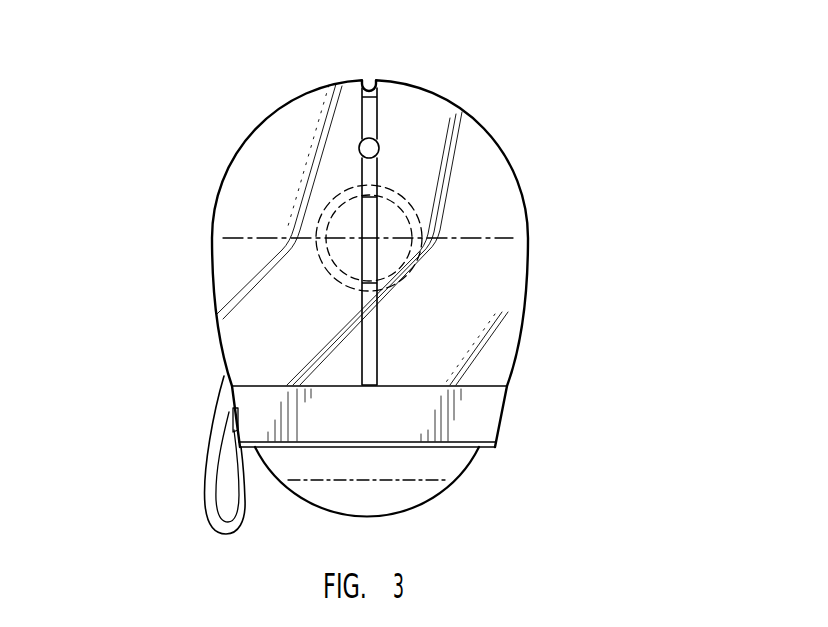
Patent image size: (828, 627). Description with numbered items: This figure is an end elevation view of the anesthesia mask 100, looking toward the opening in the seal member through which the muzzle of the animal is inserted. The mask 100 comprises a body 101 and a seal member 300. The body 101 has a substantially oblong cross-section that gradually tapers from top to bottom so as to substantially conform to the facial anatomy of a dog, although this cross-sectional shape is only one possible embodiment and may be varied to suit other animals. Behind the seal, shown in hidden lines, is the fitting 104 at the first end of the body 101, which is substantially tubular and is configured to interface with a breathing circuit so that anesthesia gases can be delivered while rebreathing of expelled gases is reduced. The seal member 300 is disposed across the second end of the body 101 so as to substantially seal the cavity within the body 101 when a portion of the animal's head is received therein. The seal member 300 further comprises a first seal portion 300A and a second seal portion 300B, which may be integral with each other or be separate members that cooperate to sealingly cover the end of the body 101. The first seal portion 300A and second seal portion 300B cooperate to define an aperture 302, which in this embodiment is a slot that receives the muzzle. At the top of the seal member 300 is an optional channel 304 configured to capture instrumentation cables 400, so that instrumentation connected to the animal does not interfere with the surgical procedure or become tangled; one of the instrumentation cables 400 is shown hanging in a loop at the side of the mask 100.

The anesthesia mask 100 is at (572, 236).
The body 101 is at (447, 492).
The fitting 104 is at (417, 204).
The seal member 300 is at (503, 158).
The first seal portion 300A is at (473, 298).
The second seal portion 300B is at (298, 337).
The aperture 302 is at (367, 353).
The channel 304 is at (369, 78).
The instrumentation cables 400 is at (207, 483).